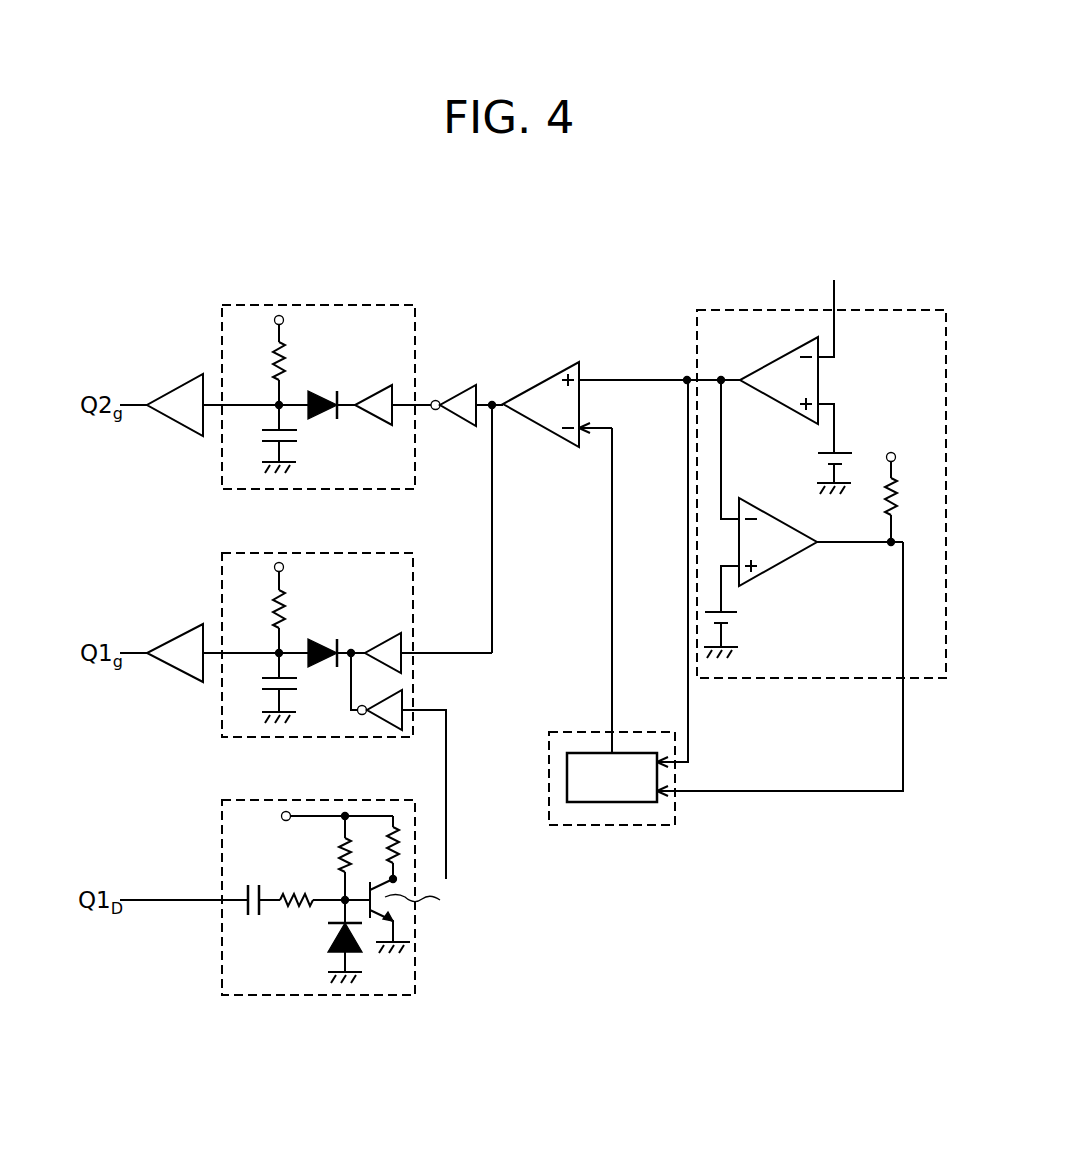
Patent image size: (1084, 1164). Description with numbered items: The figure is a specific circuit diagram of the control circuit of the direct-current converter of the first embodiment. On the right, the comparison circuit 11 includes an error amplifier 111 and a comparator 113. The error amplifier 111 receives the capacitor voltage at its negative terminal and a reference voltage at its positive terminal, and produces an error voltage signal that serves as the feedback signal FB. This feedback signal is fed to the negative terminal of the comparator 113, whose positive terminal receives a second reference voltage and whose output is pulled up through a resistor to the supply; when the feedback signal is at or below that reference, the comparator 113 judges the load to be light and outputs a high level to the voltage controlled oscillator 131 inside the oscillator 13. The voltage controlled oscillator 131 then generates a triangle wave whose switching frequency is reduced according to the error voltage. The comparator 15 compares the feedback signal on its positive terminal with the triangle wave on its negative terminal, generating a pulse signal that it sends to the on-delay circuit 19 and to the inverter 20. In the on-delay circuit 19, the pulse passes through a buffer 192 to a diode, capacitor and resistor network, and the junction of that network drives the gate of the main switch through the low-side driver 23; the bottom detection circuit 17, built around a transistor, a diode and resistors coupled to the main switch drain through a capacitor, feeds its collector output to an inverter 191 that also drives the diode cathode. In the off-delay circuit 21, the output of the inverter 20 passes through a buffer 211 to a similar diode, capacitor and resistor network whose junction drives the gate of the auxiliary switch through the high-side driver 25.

The comparison circuit 11 is at (821, 461).
The error amplifier 111 is at (771, 360).
The comparator 113 is at (787, 562).
The oscillator 13 is at (601, 823).
The VCO 131 is at (630, 803).
The comparator 15 is at (538, 378).
The bottom detection circuit 17 is at (254, 799).
The on-delay circuit 19 is at (359, 690).
The inverter 191 is at (402, 692).
The buffer 192 is at (384, 634).
The inverter 20 is at (456, 385).
The off-delay circuit 21 is at (318, 372).
The buffer 211 is at (374, 385).
The low-side driver 23 is at (172, 629).
The high-side driver 25 is at (173, 381).